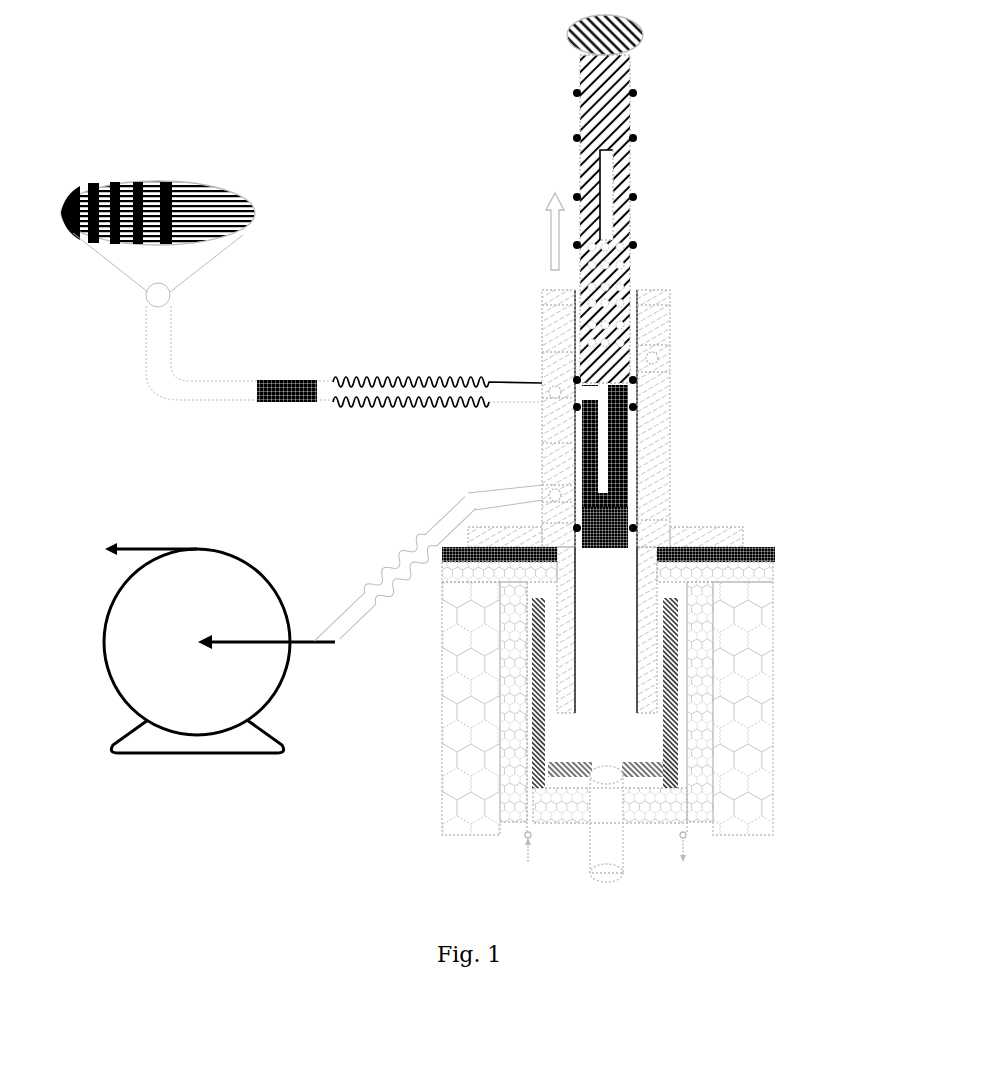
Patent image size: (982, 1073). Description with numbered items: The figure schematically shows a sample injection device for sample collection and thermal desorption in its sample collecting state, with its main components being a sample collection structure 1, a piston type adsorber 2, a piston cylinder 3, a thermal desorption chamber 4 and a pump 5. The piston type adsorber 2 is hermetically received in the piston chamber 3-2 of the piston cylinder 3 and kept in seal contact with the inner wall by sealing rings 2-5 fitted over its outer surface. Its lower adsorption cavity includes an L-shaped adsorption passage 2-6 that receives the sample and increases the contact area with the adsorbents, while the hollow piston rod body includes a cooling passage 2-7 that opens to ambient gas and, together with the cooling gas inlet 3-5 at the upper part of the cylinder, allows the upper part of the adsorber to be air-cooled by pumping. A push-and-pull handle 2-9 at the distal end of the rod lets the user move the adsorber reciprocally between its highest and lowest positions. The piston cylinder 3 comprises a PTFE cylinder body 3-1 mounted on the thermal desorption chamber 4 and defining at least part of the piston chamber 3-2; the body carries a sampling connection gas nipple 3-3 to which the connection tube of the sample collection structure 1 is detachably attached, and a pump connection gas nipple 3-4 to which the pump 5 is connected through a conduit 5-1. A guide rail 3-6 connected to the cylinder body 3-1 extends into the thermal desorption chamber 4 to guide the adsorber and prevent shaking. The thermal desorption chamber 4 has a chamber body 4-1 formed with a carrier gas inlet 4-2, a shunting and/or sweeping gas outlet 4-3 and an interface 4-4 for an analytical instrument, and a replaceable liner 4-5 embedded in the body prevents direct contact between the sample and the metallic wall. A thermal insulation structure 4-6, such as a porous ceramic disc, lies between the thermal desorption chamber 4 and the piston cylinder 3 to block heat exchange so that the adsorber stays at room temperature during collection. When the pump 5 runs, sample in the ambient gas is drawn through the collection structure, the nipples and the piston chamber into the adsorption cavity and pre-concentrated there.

The sample collection structure 1 is at (224, 333).
The piston type adsorber 2 is at (577, 316).
The sealing rings 2-5 is at (578, 542).
The adsorption passage 2-6 is at (605, 446).
The cooling passage 2-7 is at (607, 155).
The push-and-pull handle 2-9 is at (567, 33).
The piston cylinder 3 is at (622, 501).
The cylinder body 3-1 is at (667, 407).
The piston chamber 3-2 is at (690, 450).
The sampling connection gas nipple 3-3 is at (567, 388).
The pump connection gas nipple 3-4 is at (567, 492).
The cooling gas inlet 3-5 is at (667, 358).
The guide rail 3-6 is at (655, 597).
The thermal desorption chamber 4 is at (605, 697).
The chamber body 4-1 is at (535, 687).
The carrier gas inlet 4-2 is at (525, 827).
The shunting and/or sweeping gas outlet 4-3 is at (685, 828).
The interface 4-4 is at (610, 810).
The liner 4-5 is at (672, 770).
The thermal insulation structure 4-6 is at (773, 545).
The pump 5 is at (223, 538).
The conduit 5-1 is at (405, 528).